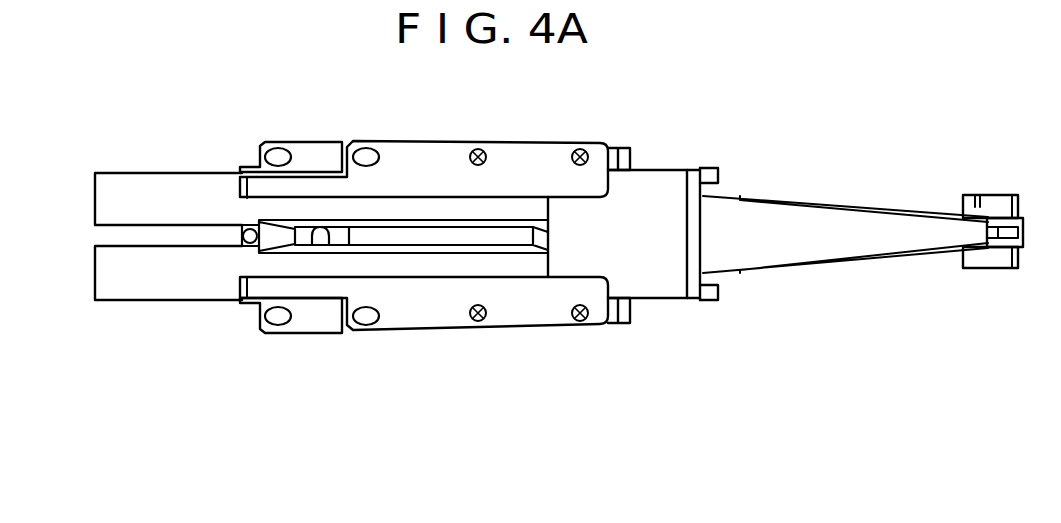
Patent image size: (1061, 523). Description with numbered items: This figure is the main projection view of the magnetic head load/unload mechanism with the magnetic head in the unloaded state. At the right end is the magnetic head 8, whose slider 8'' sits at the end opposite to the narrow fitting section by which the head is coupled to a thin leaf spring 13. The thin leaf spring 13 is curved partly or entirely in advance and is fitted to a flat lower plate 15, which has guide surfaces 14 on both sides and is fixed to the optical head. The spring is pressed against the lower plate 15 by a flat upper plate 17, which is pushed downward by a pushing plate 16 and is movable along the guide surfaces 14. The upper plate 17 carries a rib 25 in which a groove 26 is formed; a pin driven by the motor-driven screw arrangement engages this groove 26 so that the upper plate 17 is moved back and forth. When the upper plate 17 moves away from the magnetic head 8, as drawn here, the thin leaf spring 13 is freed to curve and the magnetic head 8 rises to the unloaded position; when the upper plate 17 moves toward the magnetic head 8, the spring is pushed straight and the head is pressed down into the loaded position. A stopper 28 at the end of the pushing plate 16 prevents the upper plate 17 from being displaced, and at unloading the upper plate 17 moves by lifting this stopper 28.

The magnetic head 8 is at (973, 187).
The slider 8'' is at (1011, 189).
The thin leaf spring 13 is at (670, 285).
The guide surfaces 14 is at (323, 165).
The lower plate 15 is at (292, 141).
The pushing plate 16 is at (532, 160).
The upper plate 17 is at (152, 187).
The rib 25 is at (425, 238).
The groove 26 is at (320, 243).
The stopper 28 is at (240, 290).